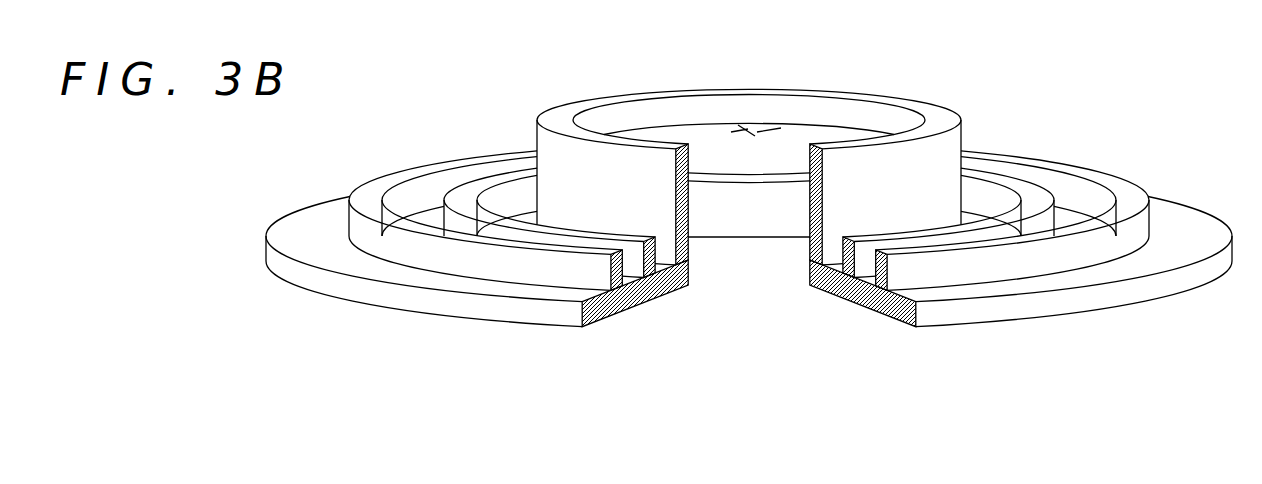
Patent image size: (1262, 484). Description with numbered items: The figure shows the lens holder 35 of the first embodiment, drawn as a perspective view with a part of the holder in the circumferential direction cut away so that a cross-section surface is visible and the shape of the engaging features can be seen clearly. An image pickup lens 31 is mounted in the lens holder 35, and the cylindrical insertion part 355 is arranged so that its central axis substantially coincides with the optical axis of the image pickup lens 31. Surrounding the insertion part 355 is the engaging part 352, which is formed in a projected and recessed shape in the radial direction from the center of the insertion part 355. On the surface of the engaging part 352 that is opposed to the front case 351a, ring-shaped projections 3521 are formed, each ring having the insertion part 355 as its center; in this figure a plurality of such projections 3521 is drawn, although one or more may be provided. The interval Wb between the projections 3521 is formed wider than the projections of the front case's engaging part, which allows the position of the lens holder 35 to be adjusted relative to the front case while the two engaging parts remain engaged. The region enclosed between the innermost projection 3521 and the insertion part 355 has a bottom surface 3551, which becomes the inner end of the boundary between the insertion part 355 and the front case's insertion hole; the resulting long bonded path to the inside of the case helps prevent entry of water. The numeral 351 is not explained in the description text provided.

The lens holder 35 is at (362, 369).
The outer annular wall 351 is at (973, 310).
The front case 351a is at (1078, 150).
The engaging part 352 is at (724, 367).
The projections 3521 is at (589, 249).
The insertion part 355 is at (560, 113).
The bottom surface 3551 is at (837, 254).
The image pickup lens 31 is at (702, 140).
The interval Wb is at (674, 249).